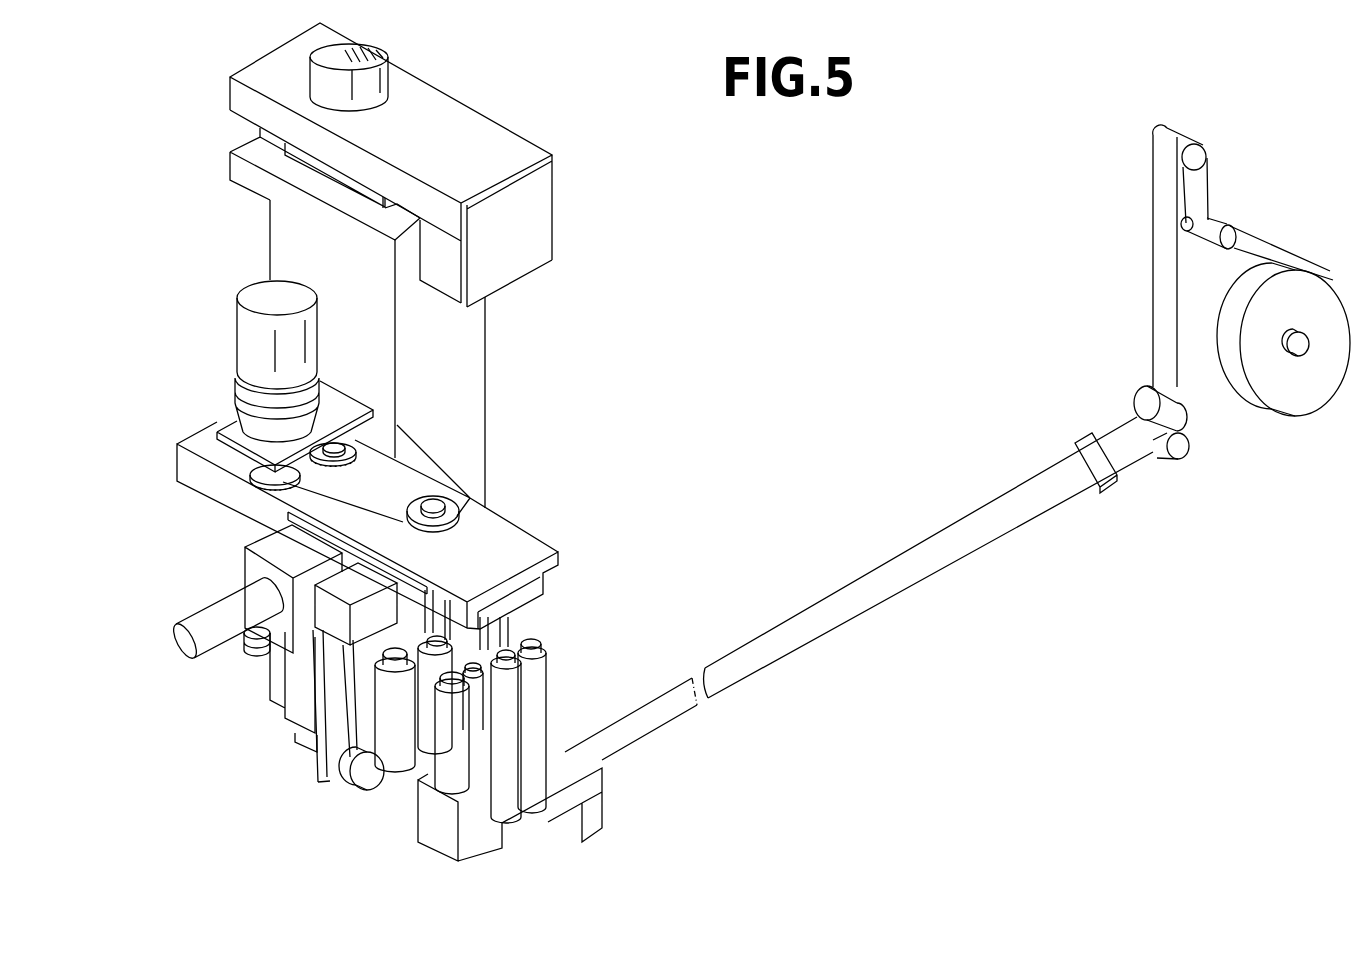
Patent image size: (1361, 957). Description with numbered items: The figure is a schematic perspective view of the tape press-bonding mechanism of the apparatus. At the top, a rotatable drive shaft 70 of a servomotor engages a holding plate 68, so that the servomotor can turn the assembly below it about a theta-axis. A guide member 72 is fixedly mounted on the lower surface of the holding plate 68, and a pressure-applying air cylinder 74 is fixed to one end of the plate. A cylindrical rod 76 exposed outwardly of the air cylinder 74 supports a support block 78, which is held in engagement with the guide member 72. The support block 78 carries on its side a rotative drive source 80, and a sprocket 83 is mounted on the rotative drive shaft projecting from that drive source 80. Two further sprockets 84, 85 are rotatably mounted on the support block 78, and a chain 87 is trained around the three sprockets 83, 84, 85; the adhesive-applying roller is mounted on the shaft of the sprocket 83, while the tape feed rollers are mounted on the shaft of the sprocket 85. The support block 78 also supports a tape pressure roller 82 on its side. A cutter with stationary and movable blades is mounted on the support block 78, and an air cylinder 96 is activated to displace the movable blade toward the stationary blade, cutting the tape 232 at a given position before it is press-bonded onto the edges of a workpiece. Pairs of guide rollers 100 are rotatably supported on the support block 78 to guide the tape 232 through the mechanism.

The holding plate 68 is at (513, 153).
The drive shaft 70 is at (375, 83).
The guide member 72 is at (343, 175).
The pressure-applying air cylinder 74 is at (528, 250).
The cylindrical rod 76 is at (410, 207).
The support block 78 is at (490, 384).
The rotative drive source 80 is at (252, 350).
The tape pressure roller 82 is at (252, 655).
The sprocket 83 is at (257, 474).
The sprocket 84 is at (352, 450).
The sprocket 85 is at (453, 508).
The chain 87 is at (413, 478).
The air cylinder 96 is at (232, 612).
The guide rollers 100 is at (537, 697).
The tape 232 is at (1333, 293).